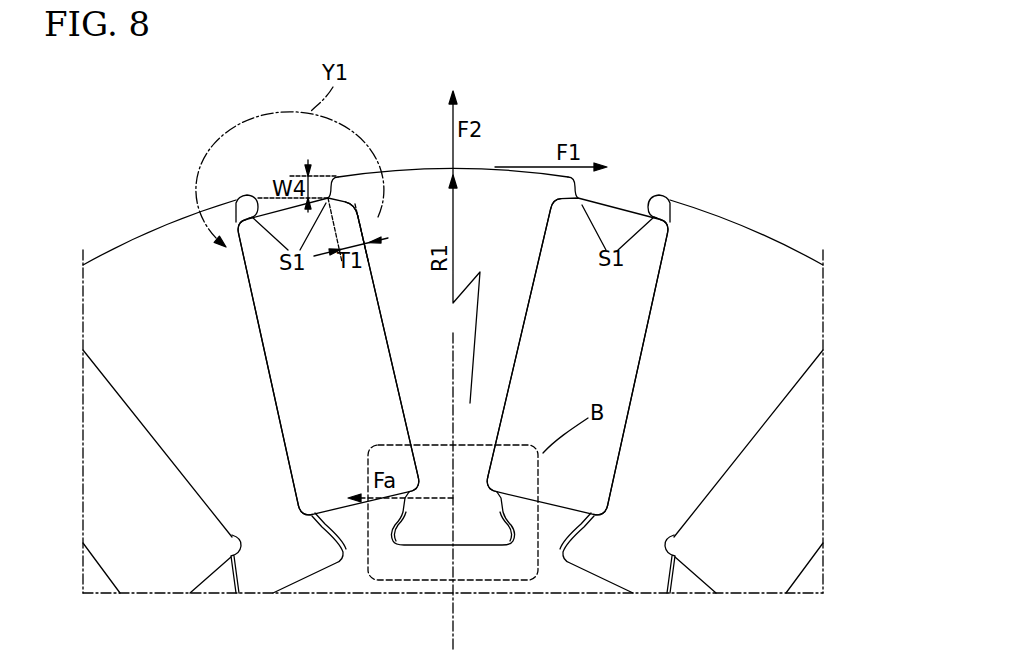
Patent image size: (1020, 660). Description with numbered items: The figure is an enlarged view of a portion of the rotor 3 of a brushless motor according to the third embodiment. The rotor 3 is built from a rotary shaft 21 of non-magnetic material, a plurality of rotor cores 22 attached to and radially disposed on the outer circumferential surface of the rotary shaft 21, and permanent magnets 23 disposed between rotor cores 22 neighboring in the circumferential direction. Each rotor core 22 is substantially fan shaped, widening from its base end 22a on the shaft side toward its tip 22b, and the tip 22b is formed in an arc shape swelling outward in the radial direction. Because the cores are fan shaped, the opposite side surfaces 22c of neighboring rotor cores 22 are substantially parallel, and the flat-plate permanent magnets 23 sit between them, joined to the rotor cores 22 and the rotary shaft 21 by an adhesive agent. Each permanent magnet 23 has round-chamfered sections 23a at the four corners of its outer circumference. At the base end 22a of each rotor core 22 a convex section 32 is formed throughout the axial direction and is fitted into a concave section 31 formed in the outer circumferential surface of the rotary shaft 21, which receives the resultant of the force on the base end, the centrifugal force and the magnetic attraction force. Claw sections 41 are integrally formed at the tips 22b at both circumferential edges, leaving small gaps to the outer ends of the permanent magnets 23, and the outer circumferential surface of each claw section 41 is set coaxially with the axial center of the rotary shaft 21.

The rotor 3 is at (185, 136).
The rotary shaft 21 is at (553, 585).
The rotor core 22 is at (183, 232).
The base end 22a is at (243, 205).
The tip 22b is at (140, 233).
The side surface 22c is at (252, 289).
The permanent magnet 23 is at (270, 214).
The round-chamfered section 23a is at (366, 206).
The concave section 31 is at (308, 562).
The convex section 32 is at (335, 515).
The claw section 41 is at (328, 193).